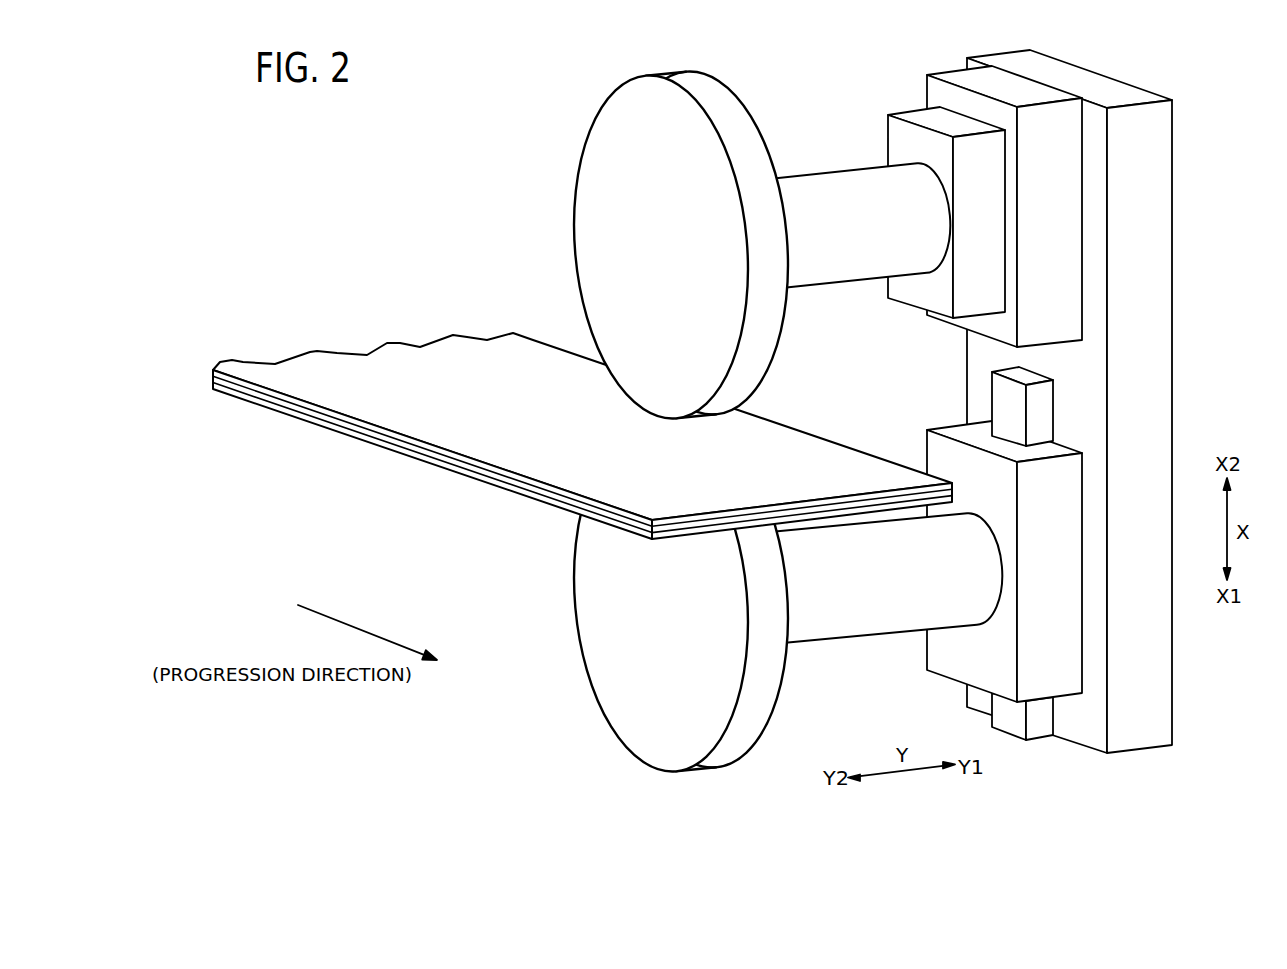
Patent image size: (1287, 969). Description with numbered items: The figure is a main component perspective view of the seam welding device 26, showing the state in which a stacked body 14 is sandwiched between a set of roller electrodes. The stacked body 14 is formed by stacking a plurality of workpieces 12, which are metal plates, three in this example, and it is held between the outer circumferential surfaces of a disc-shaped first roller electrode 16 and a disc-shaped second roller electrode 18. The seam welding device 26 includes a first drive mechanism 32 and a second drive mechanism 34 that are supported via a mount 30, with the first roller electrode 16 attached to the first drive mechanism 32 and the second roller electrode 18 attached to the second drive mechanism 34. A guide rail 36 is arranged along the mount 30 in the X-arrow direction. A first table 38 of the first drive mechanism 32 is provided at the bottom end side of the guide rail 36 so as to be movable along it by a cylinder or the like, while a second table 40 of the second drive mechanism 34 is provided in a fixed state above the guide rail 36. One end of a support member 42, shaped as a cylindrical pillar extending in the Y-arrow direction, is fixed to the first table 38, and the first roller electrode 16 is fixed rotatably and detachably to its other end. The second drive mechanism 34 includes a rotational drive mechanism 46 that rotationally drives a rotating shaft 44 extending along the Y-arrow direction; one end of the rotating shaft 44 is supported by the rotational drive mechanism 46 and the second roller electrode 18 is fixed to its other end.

The workpieces 12 is at (450, 452).
The stacked body 14 is at (582, 436).
The first roller electrode 16 is at (585, 603).
The second roller electrode 18 is at (593, 145).
The seam welding device 26 is at (453, 81).
The mount 30 is at (1155, 160).
The first drive mechanism 32 is at (763, 598).
The second drive mechanism 34 is at (741, 245).
The guide rail 36 is at (1003, 391).
The first table 38 is at (933, 448).
The second table 40 is at (962, 82).
The support member 42 is at (867, 627).
The rotating shaft 44 is at (822, 182).
The rotational drive mechanism 46 is at (912, 118).